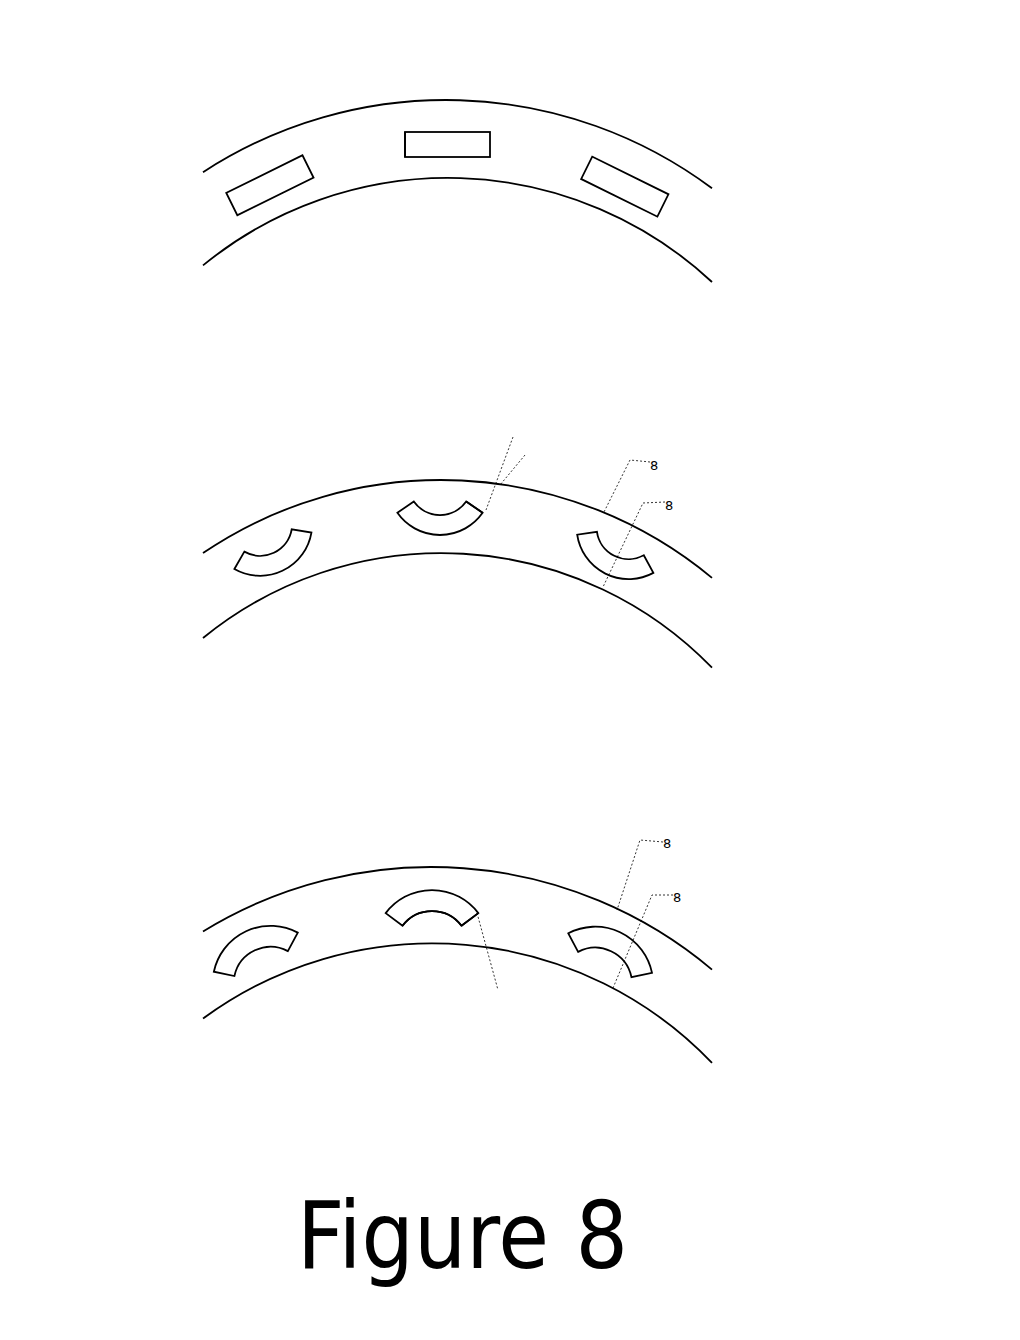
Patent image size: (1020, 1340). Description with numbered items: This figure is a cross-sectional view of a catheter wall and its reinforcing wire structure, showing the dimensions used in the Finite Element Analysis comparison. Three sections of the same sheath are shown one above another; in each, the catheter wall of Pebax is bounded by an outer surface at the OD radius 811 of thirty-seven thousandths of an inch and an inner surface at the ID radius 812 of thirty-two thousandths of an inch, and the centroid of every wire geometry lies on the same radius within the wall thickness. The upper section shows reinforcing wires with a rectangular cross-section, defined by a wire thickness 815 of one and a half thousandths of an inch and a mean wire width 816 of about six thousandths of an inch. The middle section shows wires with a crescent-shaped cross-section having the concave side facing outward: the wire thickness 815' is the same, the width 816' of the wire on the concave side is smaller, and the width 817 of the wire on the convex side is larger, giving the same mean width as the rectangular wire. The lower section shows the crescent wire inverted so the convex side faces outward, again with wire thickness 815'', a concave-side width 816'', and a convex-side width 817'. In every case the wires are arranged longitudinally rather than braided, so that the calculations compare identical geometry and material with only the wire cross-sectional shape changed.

The OD radius 811 is at (630, 142).
The ID radius 812 is at (615, 214).
The wire thickness 815 is at (334, 95).
The mean wire width 816 is at (447, 110).
The width of the wire on the convex side 817 is at (457, 618).
The width of the wire on the concave side 816' is at (381, 424).
The wire thickness 815' is at (510, 413).
The width of the wire on the convex side 817' is at (392, 837).
The width of the wire on the concave side 816'' is at (357, 1015).
The wire thickness 815'' is at (518, 1016).